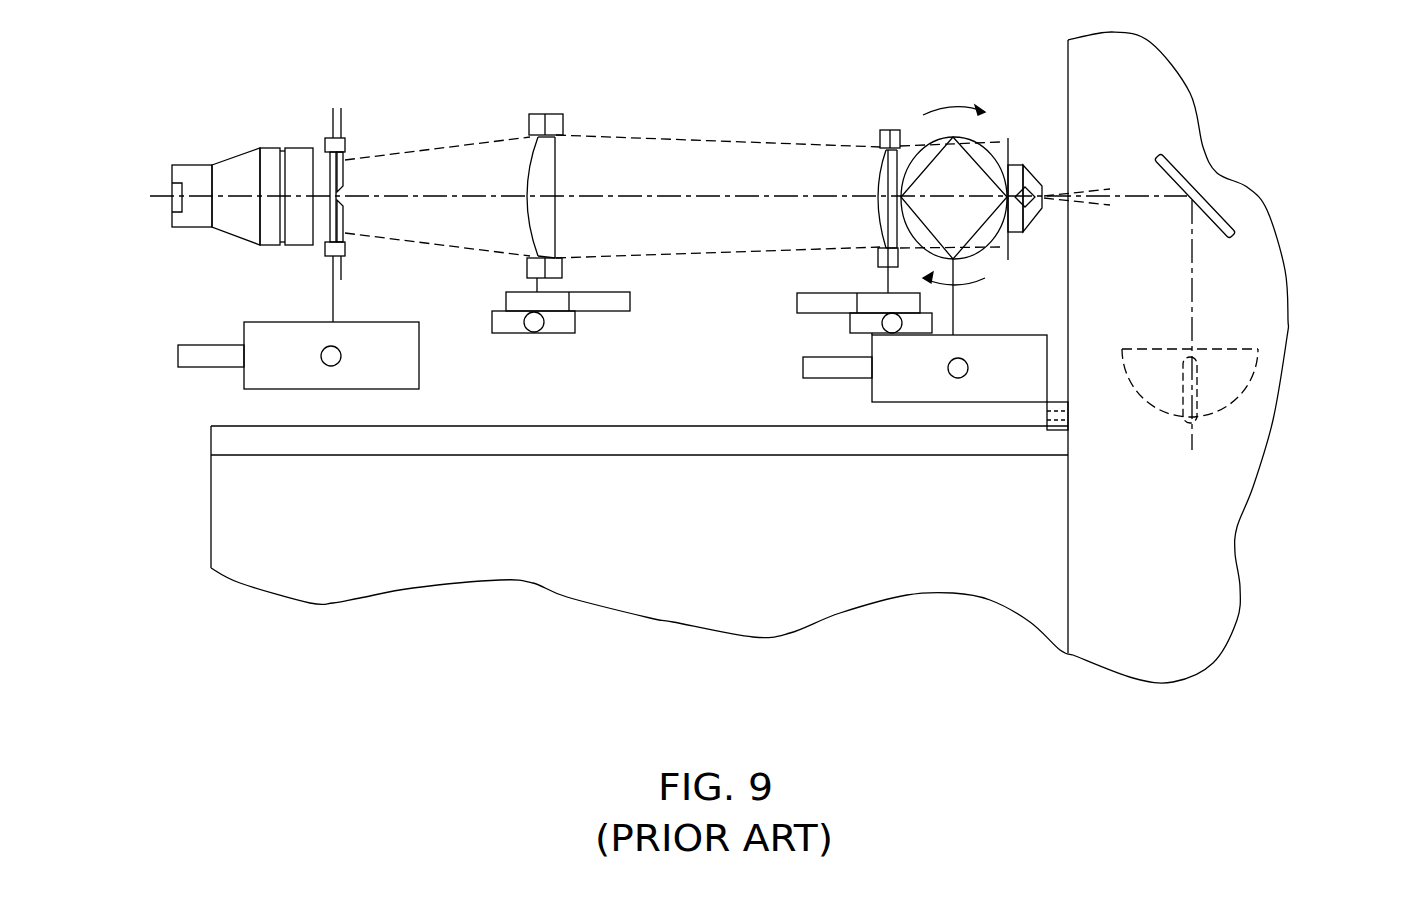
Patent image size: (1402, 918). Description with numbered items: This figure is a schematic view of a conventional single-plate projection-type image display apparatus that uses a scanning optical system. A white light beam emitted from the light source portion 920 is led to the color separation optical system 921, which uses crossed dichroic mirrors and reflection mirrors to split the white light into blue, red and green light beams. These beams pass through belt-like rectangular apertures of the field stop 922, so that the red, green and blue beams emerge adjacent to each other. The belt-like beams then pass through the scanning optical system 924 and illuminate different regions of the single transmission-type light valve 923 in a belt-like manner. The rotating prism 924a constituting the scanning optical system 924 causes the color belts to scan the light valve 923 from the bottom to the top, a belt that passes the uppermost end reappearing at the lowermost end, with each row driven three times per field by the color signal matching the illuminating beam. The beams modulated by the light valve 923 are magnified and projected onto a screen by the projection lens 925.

The light source portion 920 is at (1300, 335).
The color separation optical system 921 is at (1057, 127).
The field stop 922 is at (1007, 137).
The transmission-type light valve 923 is at (397, 117).
The scanning optical system 924 is at (727, 187).
The rotating prism 924a is at (870, 193).
The projection lens 925 is at (270, 148).